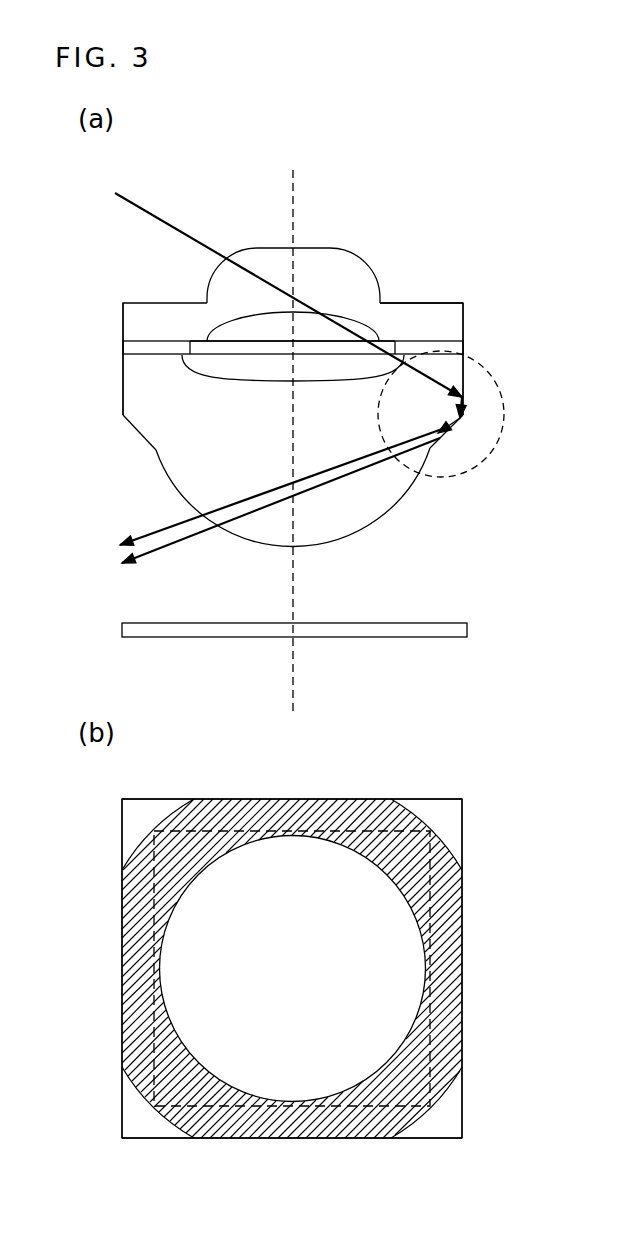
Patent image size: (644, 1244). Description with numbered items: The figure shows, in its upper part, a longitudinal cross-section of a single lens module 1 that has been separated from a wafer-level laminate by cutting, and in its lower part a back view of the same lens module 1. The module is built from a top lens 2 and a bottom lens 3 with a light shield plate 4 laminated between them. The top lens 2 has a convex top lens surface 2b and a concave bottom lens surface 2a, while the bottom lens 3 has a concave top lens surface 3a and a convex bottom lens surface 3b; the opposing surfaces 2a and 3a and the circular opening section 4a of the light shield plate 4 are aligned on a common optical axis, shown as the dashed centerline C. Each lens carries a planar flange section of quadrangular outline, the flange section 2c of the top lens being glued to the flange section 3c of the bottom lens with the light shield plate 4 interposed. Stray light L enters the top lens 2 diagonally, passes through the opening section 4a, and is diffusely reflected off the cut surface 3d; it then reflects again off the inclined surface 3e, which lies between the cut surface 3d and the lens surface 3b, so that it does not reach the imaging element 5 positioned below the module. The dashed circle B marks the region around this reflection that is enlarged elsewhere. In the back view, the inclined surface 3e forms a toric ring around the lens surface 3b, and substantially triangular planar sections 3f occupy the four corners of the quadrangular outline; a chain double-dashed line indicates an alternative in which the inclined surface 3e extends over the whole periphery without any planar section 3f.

The lens module 1 is at (379, 226).
The top lens 2 is at (377, 315).
The bottom lens surface 2a is at (283, 313).
The top lens surface 2b is at (323, 248).
The flange section 2c is at (463, 348).
The bottom lens 3 is at (293, 726).
The top lens surface 3a is at (300, 376).
The bottom lens surface 3b is at (398, 500).
The flange section 3c is at (437, 341).
The cut surface 3d is at (123, 390).
The inclined surface 3e is at (137, 428).
The planar section 3f is at (145, 813).
The light shield plate 4 is at (260, 281).
The opening section 4a is at (239, 344).
The imaging element 5 is at (365, 623).
The stray light L is at (162, 220).
The optical axis C is at (293, 201).
The section B is at (495, 385).